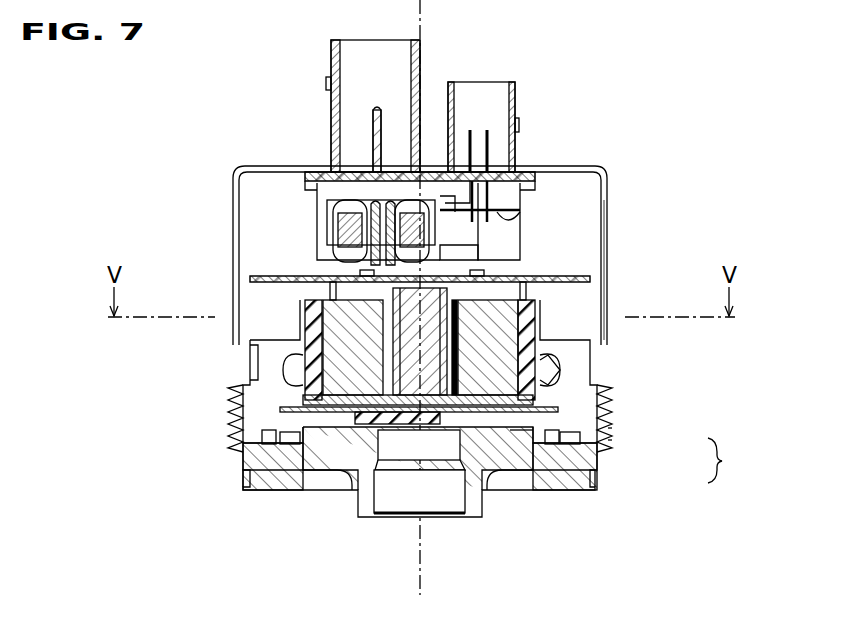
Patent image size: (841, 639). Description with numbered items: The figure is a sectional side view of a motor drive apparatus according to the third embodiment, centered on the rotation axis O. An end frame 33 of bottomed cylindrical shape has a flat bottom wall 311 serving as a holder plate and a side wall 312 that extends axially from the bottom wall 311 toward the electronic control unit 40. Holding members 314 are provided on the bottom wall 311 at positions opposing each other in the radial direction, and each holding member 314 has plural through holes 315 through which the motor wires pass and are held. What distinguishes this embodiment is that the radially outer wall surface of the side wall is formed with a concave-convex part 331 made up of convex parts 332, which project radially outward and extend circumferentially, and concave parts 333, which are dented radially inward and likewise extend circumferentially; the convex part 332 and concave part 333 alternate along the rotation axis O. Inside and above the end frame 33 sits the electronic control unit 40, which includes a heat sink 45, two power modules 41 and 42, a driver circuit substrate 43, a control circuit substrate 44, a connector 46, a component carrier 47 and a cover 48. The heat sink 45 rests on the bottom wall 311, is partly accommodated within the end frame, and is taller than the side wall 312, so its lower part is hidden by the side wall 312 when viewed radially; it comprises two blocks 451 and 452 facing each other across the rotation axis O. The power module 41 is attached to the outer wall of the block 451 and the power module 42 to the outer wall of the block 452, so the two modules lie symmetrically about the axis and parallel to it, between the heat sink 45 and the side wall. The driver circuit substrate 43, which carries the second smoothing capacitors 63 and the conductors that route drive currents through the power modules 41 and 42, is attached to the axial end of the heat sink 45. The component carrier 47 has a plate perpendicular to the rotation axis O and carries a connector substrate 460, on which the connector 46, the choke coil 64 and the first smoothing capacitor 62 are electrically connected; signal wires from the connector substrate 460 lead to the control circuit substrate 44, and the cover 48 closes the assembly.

The end frame 33 is at (600, 485).
The electronic control unit 40 is at (612, 341).
The power module 41 is at (323, 325).
The power module 42 is at (535, 330).
The driver circuit substrate 43 is at (297, 277).
The control circuit substrate 44 is at (303, 400).
The heat sink 45 is at (348, 396).
The connector 46 is at (515, 92).
The component carrier 47 is at (535, 182).
The cover 48 is at (607, 180).
The first smoothing capacitor 62 is at (518, 194).
The second smoothing capacitor 63 is at (535, 382).
The choke coil 64 is at (335, 215).
The bottom wall 311 is at (520, 470).
The side wall 312 is at (258, 343).
The holding member 314 is at (287, 416).
The through hole 315 is at (268, 445).
The concave-convex part 331 is at (736, 460).
The convex part 332 is at (612, 430).
The concave part 333 is at (612, 440).
The block 451 is at (330, 290).
The block 452 is at (520, 290).
The connector substrate 460 is at (500, 234).
The rotation axis O is at (421, 568).